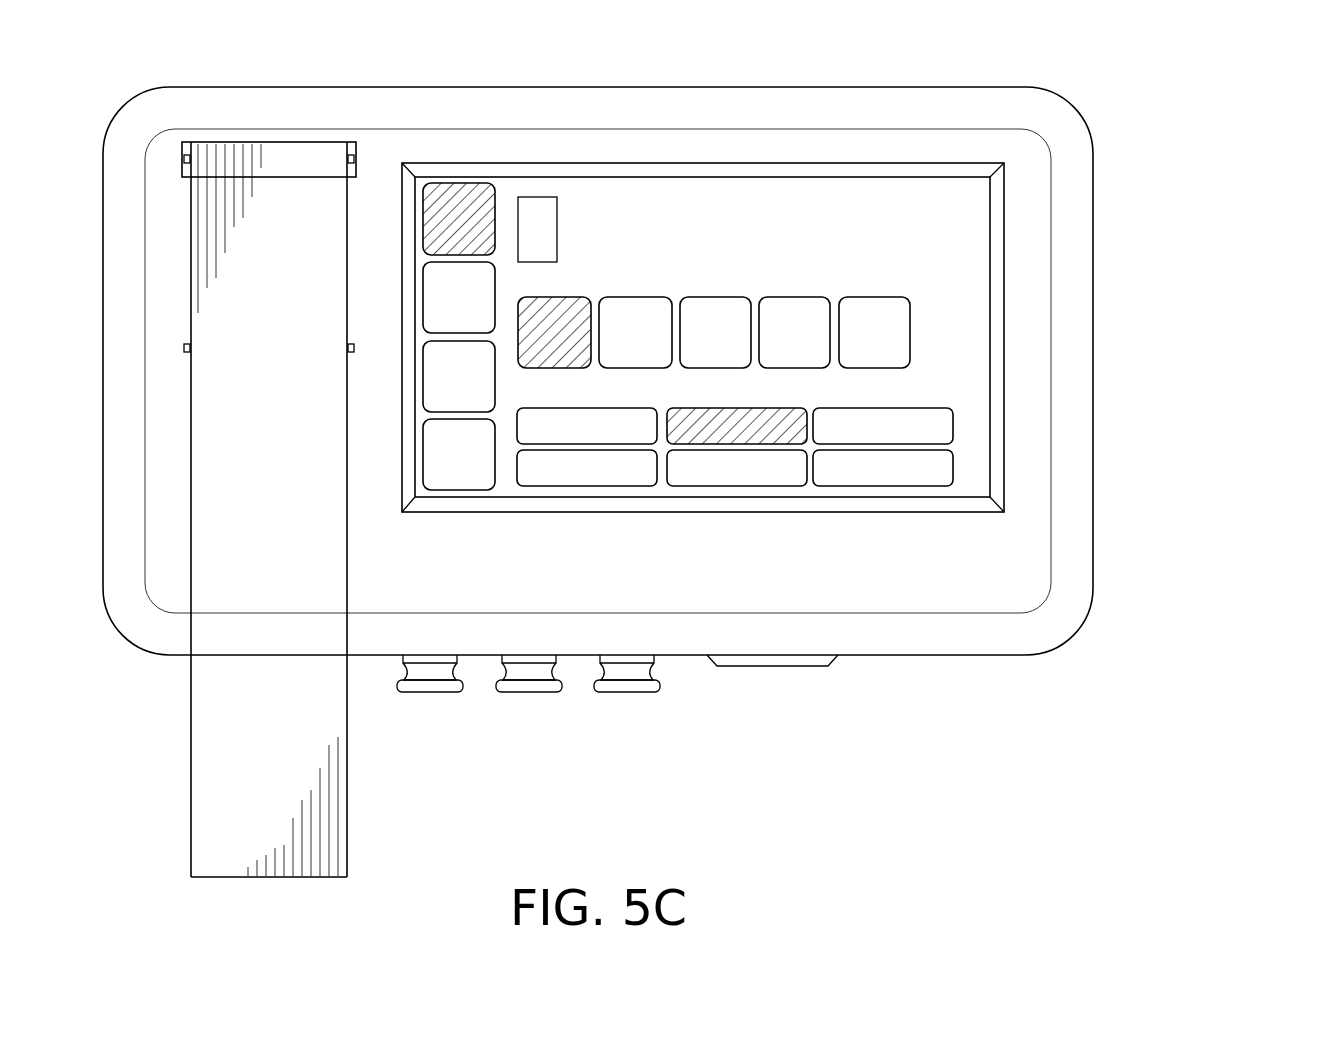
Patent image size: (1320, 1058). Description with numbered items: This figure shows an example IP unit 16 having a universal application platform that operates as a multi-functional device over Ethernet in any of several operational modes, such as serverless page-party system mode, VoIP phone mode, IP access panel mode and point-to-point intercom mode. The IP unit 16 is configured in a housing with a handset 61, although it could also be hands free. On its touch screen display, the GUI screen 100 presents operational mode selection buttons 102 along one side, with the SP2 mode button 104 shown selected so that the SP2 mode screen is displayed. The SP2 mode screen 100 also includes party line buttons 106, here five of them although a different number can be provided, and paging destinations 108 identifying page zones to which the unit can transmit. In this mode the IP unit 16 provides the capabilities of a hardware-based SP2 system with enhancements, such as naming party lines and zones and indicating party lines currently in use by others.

The IP unit 16 is at (705, 361).
The handset 61 is at (240, 803).
The GUI screen 100 is at (742, 218).
The operational mode selection buttons 102 is at (405, 530).
The SP2 mode button 104 is at (462, 200).
The party line buttons 106 is at (915, 387).
The paging destinations 108 is at (952, 398).